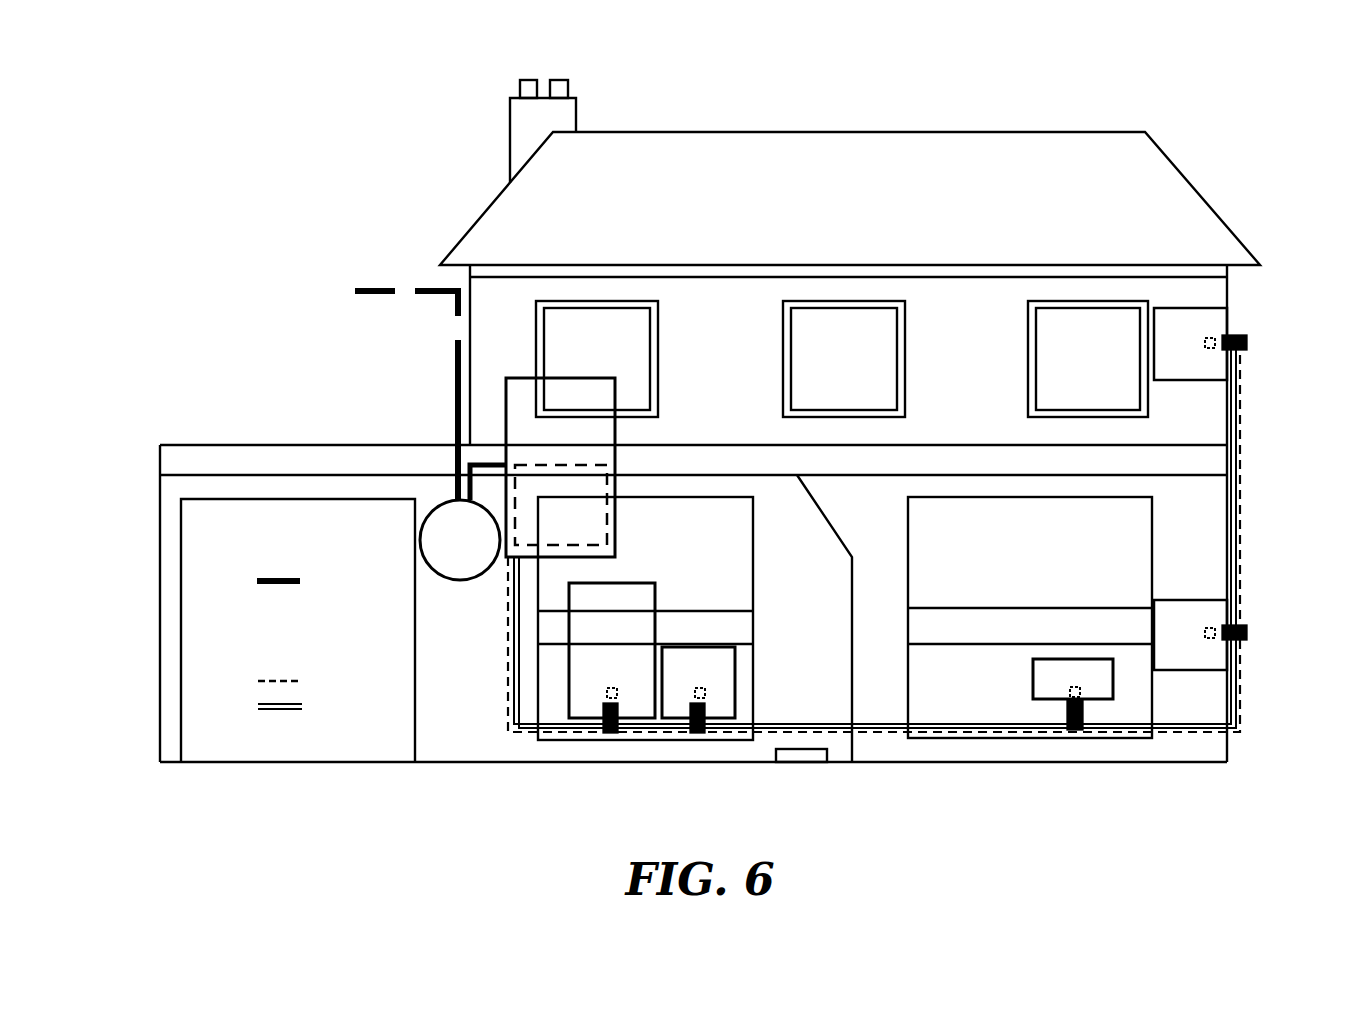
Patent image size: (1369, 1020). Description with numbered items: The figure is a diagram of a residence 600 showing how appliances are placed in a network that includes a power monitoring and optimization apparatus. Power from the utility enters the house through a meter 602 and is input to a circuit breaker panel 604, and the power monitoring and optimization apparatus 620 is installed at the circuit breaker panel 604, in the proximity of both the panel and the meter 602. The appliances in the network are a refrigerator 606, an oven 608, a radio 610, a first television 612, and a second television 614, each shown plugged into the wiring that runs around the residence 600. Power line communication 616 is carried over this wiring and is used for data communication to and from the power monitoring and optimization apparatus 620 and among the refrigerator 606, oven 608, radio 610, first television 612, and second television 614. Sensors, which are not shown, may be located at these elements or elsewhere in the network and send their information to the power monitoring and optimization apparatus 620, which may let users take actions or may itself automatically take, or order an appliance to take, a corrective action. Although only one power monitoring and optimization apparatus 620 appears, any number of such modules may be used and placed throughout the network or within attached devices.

The residence 600 is at (1228, 292).
The meter 602 is at (440, 502).
The circuit breaker panel 604 is at (512, 378).
The power monitoring and optimization apparatus 620 is at (517, 463).
The refrigerator 606 is at (569, 677).
The oven 608 is at (735, 677).
The radio 610 is at (1113, 675).
The first television 612 is at (1210, 670).
The second television 614 is at (1210, 380).
The power line communication 616 is at (1195, 735).